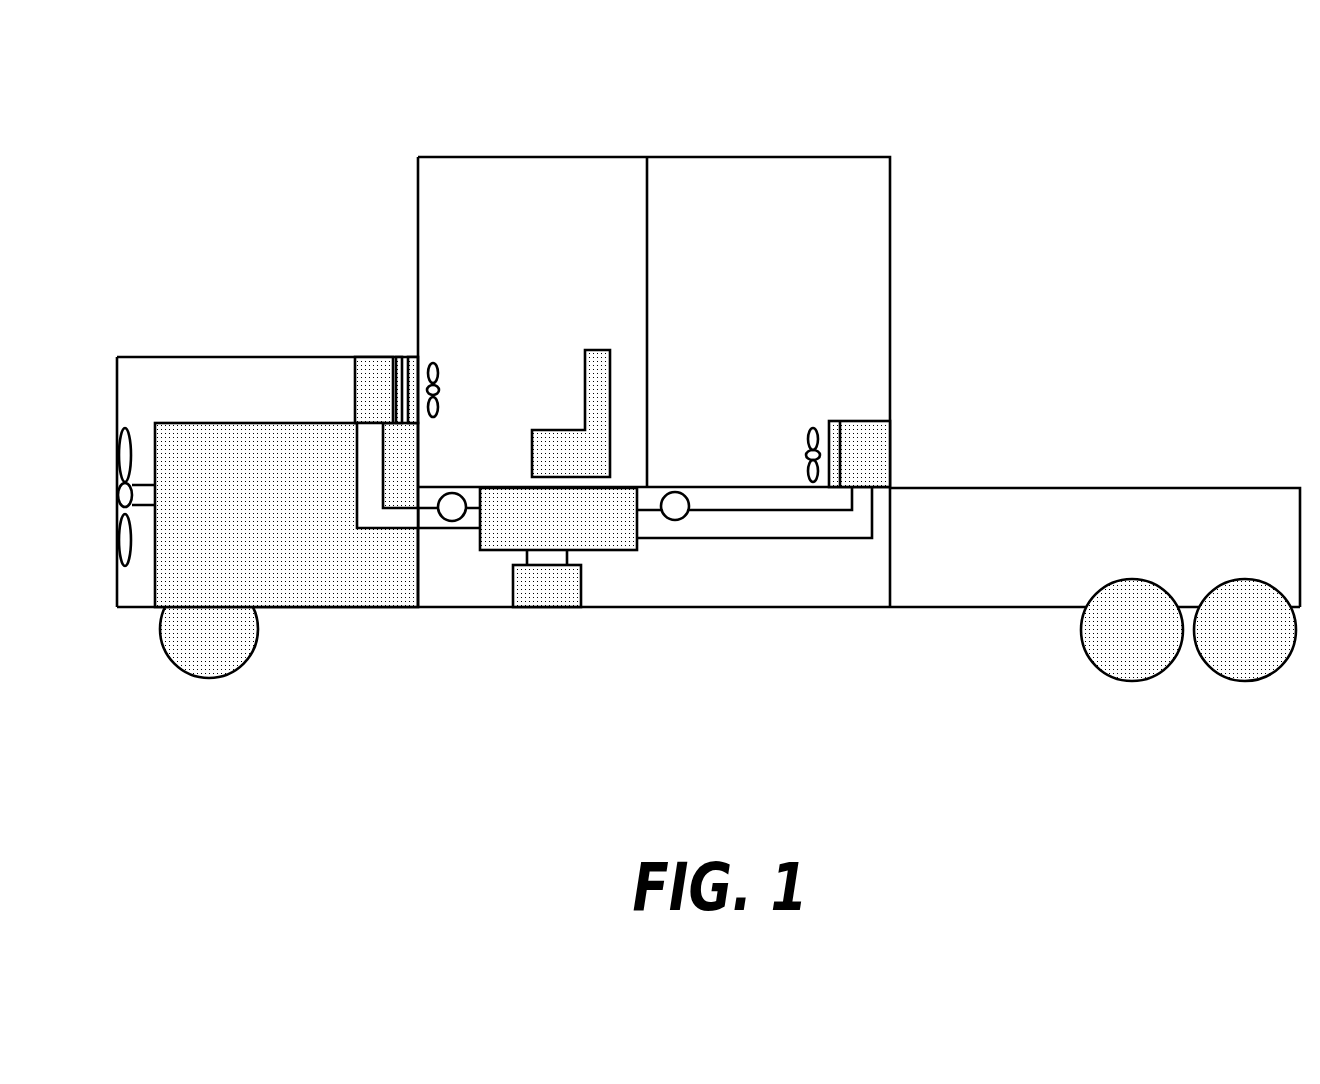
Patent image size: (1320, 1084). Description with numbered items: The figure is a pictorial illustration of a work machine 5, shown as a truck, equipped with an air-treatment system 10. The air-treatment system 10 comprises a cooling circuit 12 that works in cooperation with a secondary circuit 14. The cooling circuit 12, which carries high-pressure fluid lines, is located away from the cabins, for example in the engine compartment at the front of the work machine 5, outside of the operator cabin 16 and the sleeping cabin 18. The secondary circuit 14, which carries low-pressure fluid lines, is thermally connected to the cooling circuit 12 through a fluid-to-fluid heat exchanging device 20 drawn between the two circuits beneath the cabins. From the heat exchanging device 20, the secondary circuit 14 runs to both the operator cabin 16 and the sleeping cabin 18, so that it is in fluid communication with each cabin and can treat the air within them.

The work machine 5 is at (932, 136).
The air-treatment system 10 is at (731, 596).
The cooling circuit 12 is at (531, 600).
The secondary circuit 14 is at (722, 562).
The operator cabin 16 is at (540, 278).
The sleeping cabin 18 is at (735, 278).
The fluid-to-fluid heat exchanging device 20 is at (529, 530).